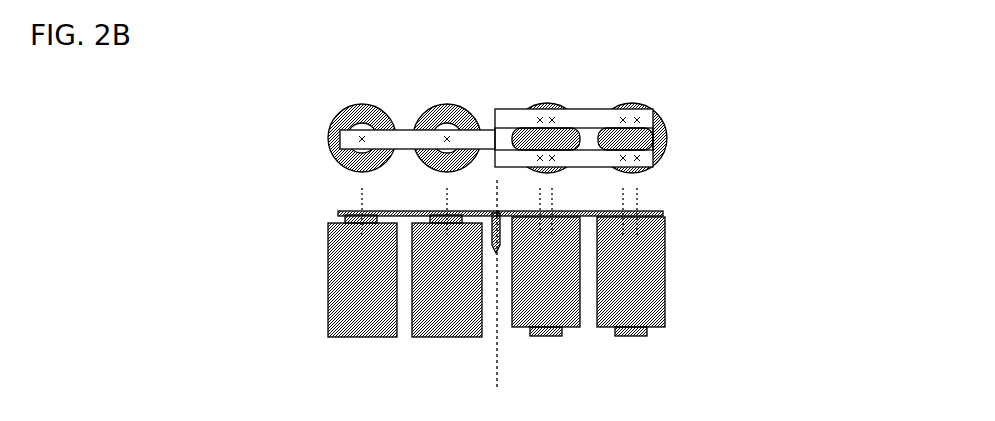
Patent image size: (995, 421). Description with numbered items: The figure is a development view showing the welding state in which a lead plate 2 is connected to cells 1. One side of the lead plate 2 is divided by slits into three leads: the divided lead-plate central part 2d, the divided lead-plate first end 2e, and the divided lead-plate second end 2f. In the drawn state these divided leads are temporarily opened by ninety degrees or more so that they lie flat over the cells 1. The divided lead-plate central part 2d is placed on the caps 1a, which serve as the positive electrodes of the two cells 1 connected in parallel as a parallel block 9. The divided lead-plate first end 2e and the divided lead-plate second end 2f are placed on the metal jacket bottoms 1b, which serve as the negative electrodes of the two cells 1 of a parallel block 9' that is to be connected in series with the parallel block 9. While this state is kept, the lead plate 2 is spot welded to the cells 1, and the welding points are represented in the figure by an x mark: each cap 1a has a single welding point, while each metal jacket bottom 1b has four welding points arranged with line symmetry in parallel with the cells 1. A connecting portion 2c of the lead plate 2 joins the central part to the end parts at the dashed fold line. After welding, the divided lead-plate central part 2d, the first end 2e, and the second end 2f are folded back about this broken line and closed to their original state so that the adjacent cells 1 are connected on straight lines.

The cell 1 is at (665, 268).
The cap 1a is at (345, 218).
The metal jacket bottom 1b is at (662, 212).
The lead plate 2 is at (617, 265).
The connecting portion 2c is at (497, 237).
The divided lead-plate central part 2d is at (405, 130).
The divided lead-plate first end 2e is at (653, 109).
The divided lead-plate second end 2f is at (655, 150).
The parallel block 9 is at (405, 306).
The parallel block 9' is at (588, 370).